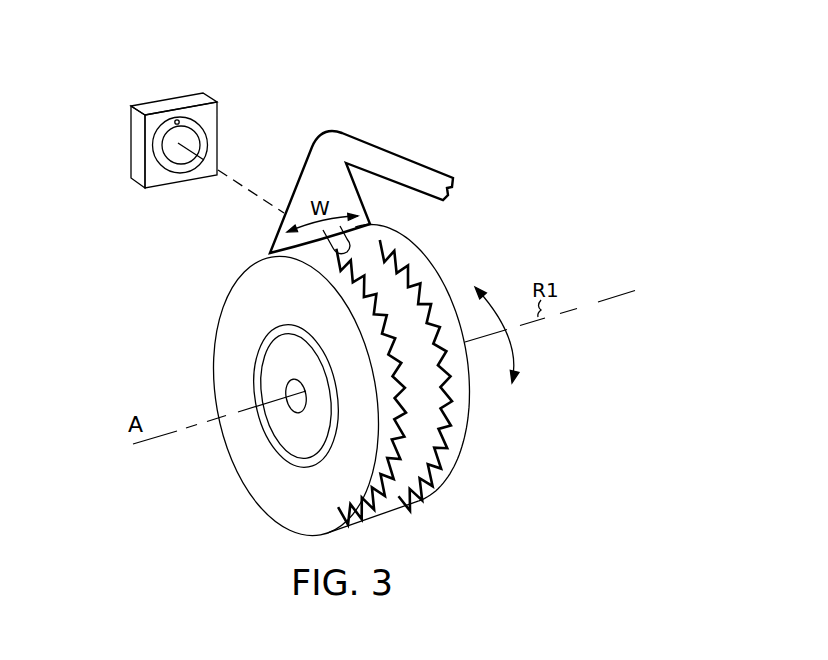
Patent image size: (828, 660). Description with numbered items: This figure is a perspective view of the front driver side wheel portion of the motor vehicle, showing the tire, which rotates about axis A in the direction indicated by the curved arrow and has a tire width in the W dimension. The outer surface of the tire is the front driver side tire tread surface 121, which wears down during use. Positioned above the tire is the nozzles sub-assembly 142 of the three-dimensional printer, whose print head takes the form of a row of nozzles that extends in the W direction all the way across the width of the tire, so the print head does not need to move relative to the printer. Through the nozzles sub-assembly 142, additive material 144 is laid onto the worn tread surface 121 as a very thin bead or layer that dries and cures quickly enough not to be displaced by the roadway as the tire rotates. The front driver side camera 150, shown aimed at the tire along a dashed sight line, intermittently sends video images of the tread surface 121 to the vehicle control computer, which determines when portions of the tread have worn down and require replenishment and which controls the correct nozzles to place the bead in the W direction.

The front driver side tire tread surface 121 is at (415, 470).
The nozzles sub-assembly 142 is at (400, 157).
The additive material 144 is at (327, 252).
The front driver side camera 150 is at (145, 110).